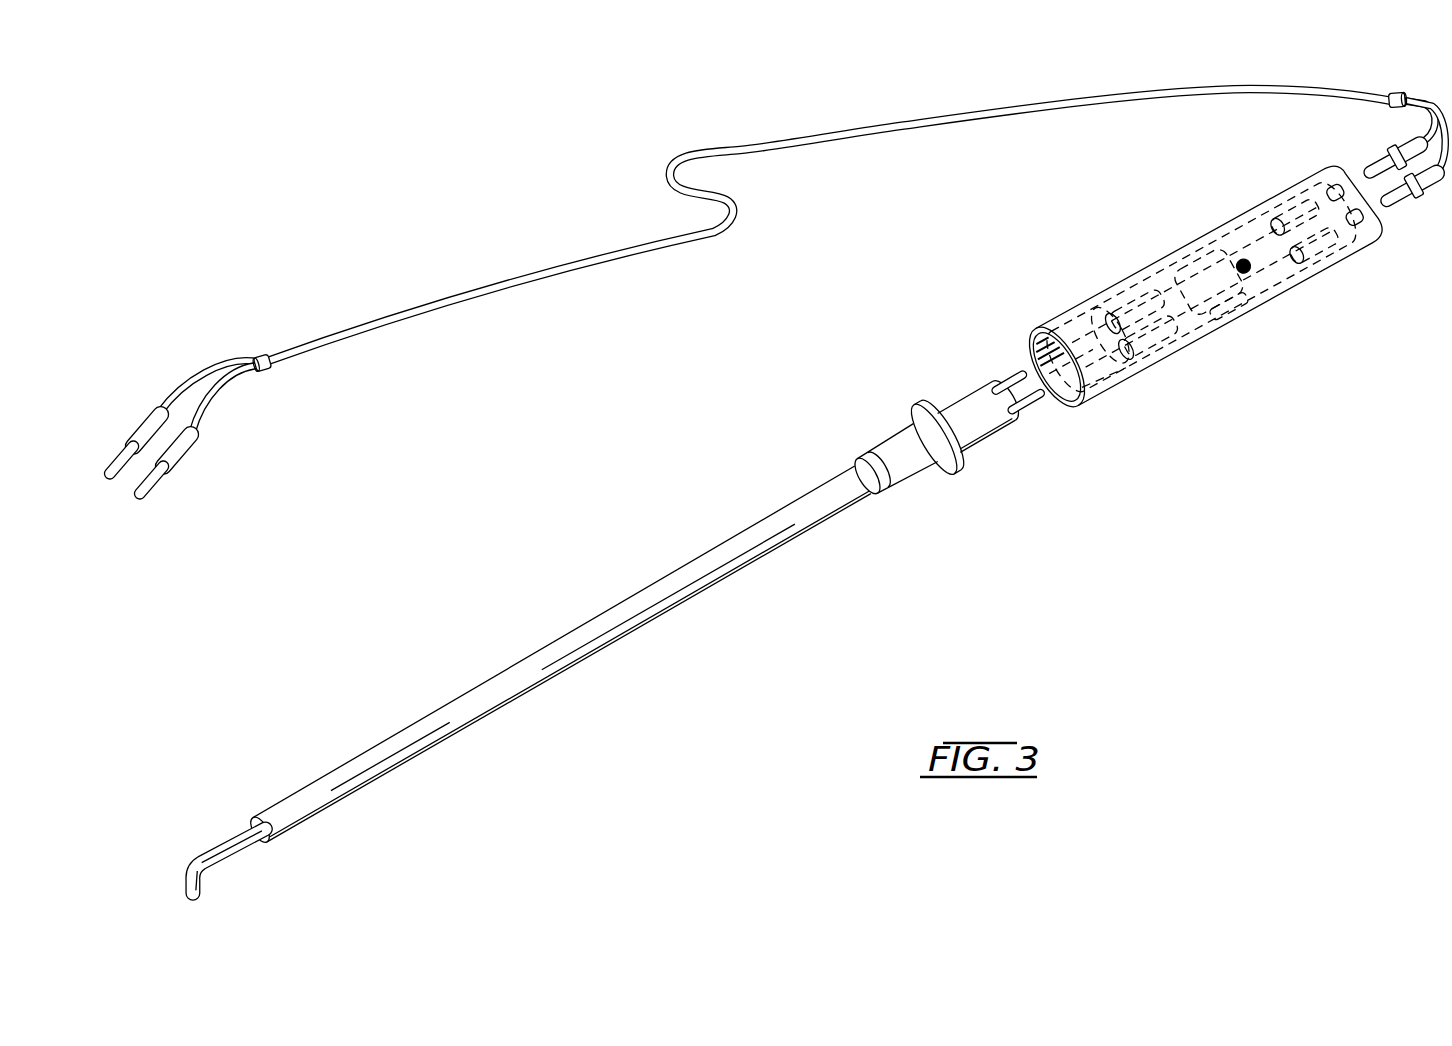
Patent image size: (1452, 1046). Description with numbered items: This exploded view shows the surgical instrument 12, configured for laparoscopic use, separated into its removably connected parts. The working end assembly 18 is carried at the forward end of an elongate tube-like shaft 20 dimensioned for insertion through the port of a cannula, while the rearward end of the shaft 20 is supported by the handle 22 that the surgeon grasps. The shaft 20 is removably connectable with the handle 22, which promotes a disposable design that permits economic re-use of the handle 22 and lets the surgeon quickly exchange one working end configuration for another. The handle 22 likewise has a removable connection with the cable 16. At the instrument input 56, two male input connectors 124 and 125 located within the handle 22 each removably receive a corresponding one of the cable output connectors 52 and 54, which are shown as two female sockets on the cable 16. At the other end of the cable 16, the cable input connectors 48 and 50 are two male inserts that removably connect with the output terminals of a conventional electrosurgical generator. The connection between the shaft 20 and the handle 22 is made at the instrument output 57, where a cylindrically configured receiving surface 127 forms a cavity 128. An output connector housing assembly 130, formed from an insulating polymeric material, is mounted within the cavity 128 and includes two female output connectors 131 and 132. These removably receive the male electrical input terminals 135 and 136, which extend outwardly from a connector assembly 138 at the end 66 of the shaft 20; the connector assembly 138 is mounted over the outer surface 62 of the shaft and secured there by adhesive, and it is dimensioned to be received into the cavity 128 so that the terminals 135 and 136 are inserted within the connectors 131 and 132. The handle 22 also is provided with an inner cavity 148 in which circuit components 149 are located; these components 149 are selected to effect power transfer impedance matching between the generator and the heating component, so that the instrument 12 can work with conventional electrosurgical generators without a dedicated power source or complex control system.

The surgical instrument 12 is at (728, 407).
The cable 16 is at (733, 212).
The working end assembly 18 is at (214, 828).
The shaft 20 is at (578, 618).
The handle 22 is at (1270, 310).
The cable input connector 48 is at (148, 416).
The cable input connector 50 is at (181, 458).
The cable output connector 52 is at (1378, 156).
The cable output connector 54 is at (1398, 200).
The instrument input 56 is at (1326, 157).
The instrument output 57 is at (1013, 330).
The outer surface 62 is at (758, 553).
The end of shaft 66 is at (944, 495).
The male input connector 124 is at (1325, 198).
The male input connector 125 is at (1350, 225).
The receiving surface 127 is at (1062, 335).
The cavity 128 is at (1100, 378).
The output connector housing assembly 130 is at (1119, 358).
The female output connector 131 is at (1133, 313).
The female output connector 132 is at (1152, 342).
The electrical input terminal 135 is at (1013, 374).
The electrical input terminal 136 is at (1021, 407).
The connector assembly 138 is at (950, 390).
The inner cavity 148 is at (1190, 273).
The circuit components 149 is at (1230, 314).